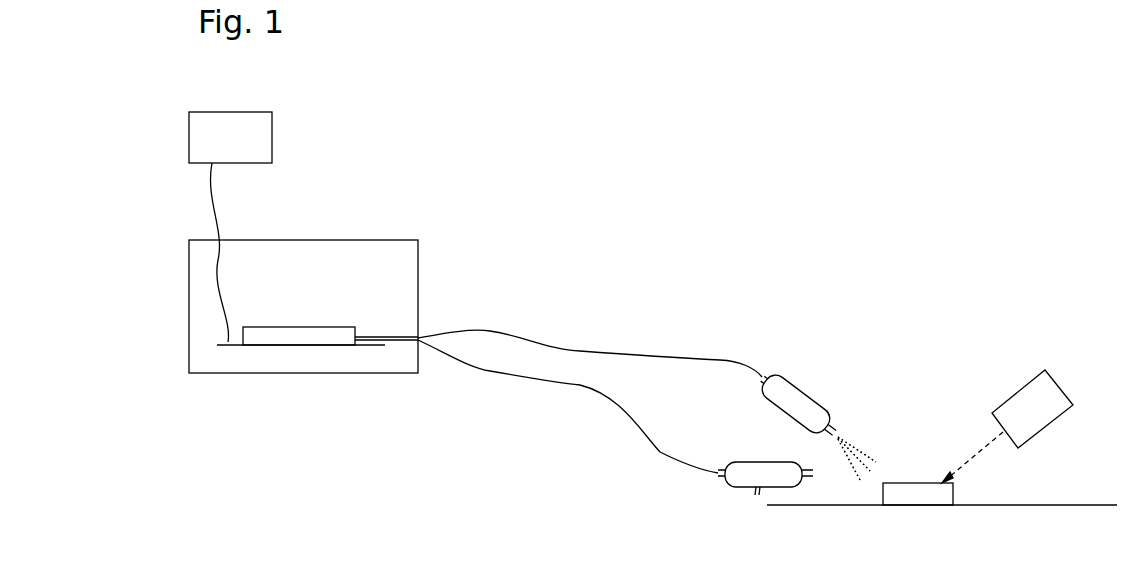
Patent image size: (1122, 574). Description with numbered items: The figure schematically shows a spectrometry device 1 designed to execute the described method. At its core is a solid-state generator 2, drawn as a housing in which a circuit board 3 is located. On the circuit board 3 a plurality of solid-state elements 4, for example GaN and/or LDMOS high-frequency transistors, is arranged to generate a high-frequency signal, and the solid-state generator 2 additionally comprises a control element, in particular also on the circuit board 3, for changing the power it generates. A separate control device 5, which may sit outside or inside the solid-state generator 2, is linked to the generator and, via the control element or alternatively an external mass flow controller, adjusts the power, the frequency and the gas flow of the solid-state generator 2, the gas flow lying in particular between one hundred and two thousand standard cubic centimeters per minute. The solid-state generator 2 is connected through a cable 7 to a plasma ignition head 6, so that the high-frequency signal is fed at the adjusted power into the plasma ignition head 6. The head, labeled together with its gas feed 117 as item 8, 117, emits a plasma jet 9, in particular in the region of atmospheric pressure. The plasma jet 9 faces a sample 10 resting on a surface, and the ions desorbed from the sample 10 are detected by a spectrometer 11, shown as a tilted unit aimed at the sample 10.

The spectrometry device 1 is at (808, 137).
The solid-state generator 2 is at (385, 240).
The circuit board 3 is at (370, 347).
The solid-state elements 4 is at (298, 336).
The control device 5 is at (272, 139).
The plasma ignition head 6 is at (778, 418).
The cable 7 is at (530, 370).
The handpiece 8 is at (797, 390).
The gas feed 117 is at (798, 383).
The plasma jet 9 is at (851, 453).
The sample 10 is at (920, 483).
The spectrometer 11 is at (1020, 388).